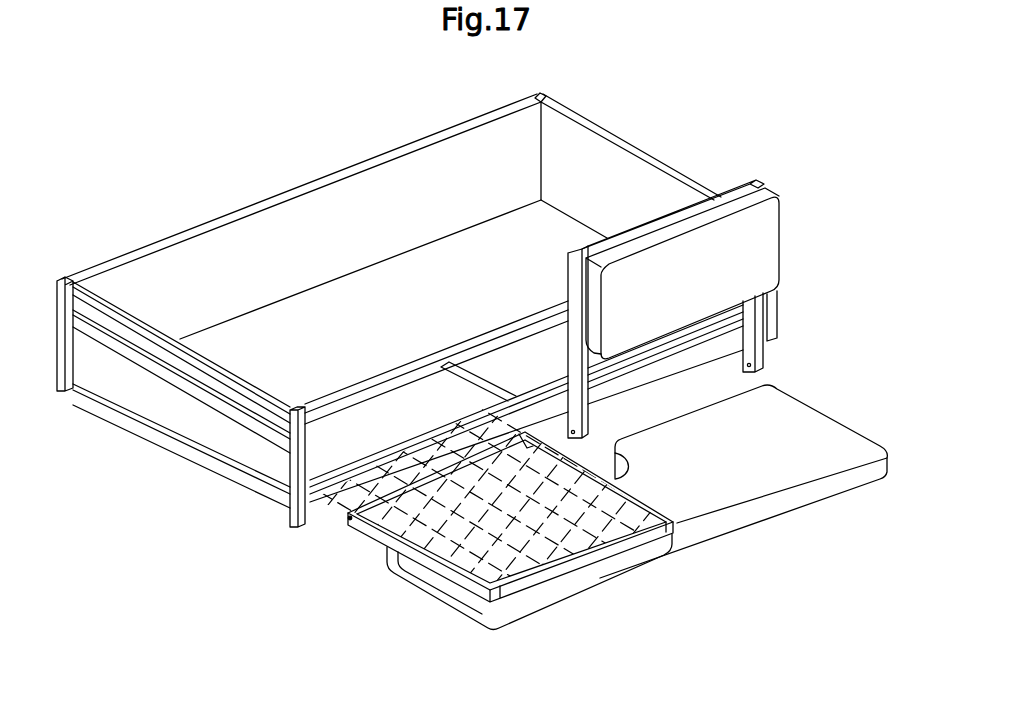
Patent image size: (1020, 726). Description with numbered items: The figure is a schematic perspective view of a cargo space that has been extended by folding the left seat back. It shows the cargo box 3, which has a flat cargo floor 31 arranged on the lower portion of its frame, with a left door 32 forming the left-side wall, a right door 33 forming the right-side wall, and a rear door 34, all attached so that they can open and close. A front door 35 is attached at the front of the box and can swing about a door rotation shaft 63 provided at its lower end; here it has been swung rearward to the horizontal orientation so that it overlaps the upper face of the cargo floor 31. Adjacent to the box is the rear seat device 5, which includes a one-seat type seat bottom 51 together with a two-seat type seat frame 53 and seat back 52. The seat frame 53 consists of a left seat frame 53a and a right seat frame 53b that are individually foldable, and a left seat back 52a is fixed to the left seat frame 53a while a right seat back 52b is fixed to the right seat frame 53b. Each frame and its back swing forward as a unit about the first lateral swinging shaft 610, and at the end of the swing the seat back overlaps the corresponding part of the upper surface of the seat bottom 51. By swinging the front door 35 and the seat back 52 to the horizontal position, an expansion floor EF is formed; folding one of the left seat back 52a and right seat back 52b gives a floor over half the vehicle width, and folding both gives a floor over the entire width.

The cargo box 3 is at (327, 150).
The rear door 34 is at (215, 222).
The right door 33 is at (618, 143).
The cargo floor 31 is at (366, 297).
The left door 32 is at (165, 335).
The front door 35 is at (355, 395).
The expansion floor EF is at (458, 470).
The door rotation shaft 63 is at (294, 491).
The first lateral swinging shaft 610 is at (349, 520).
The seat frame 53 is at (485, 539).
The right seat frame 53b is at (433, 566).
The seat back 52 is at (651, 417).
The right seat back 52b is at (597, 572).
The left seat back 52a is at (762, 238).
The rear seat device 5 is at (812, 276).
The left seat frame 53a is at (758, 351).
The seat bottom 51 is at (770, 508).